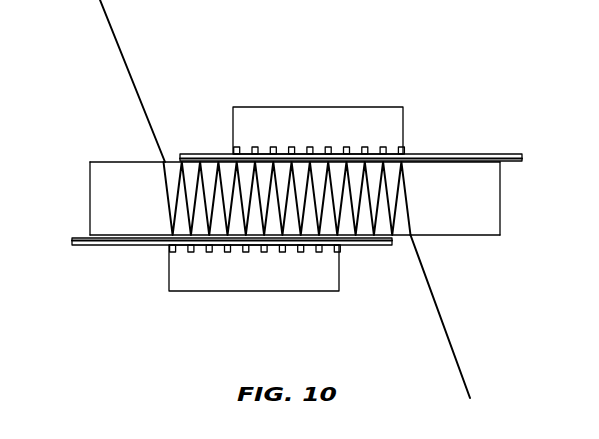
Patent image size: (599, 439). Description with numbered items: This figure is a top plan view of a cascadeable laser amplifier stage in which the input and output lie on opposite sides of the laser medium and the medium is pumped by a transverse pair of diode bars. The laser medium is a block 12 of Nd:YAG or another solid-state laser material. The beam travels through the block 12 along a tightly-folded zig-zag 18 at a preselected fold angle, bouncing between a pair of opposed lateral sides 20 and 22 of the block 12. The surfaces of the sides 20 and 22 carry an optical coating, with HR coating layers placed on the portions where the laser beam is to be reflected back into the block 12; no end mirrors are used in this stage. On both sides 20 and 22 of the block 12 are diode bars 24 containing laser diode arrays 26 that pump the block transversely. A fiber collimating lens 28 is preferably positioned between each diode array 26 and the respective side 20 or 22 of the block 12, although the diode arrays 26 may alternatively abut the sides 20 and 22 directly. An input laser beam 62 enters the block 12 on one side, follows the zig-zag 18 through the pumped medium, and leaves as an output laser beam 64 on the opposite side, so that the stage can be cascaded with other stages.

The block 12 is at (90, 204).
The tightly-folded zig-zag 18 is at (167, 207).
The lateral side 20 is at (482, 163).
The lateral side 22 is at (499, 235).
The diode bar 24 is at (233, 122).
The laser diode array 26 is at (254, 146).
The fiber collimating lens 28 is at (490, 154).
The input beam 62 is at (119, 50).
The output beam 64 is at (447, 338).